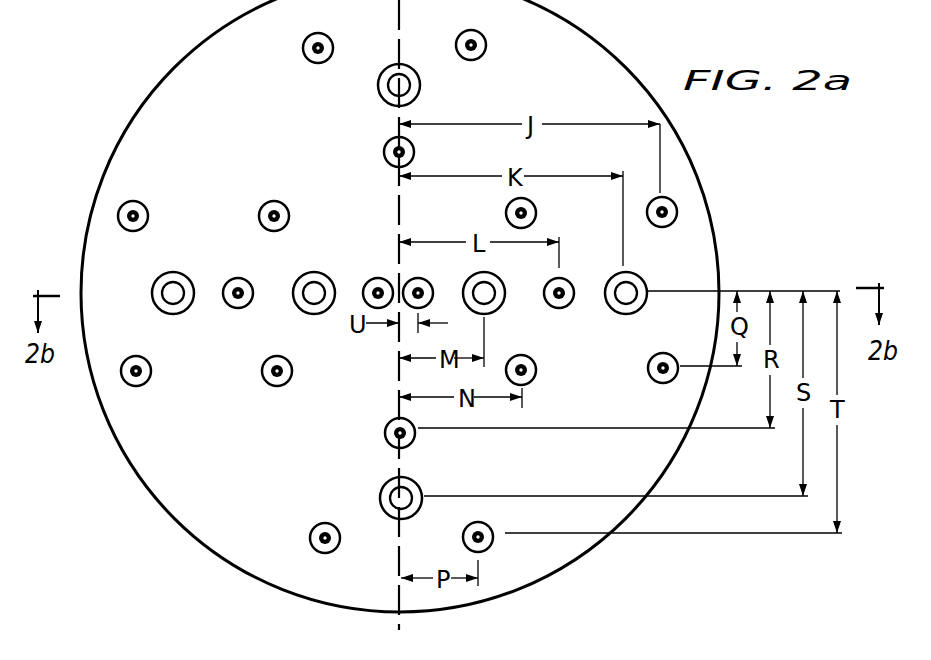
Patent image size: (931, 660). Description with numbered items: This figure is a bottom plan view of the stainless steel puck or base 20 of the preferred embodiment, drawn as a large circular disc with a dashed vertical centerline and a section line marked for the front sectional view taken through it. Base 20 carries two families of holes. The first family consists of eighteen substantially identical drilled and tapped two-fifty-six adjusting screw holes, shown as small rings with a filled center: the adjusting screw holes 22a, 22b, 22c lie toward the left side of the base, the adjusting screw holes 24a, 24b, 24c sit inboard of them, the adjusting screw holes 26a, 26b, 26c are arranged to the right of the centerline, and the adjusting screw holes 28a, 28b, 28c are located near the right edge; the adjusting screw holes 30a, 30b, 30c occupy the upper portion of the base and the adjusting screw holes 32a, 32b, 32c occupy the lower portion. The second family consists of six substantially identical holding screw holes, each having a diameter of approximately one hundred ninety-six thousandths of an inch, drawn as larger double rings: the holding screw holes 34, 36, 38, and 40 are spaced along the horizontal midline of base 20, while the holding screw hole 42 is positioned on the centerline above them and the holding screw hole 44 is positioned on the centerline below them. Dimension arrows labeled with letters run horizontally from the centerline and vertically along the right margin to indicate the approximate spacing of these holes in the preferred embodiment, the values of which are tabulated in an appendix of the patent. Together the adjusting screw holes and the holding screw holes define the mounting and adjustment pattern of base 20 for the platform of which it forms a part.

The base 20 is at (244, 139).
The adjusting screw hole 22a is at (138, 212).
The adjusting screw hole 22b is at (243, 299).
The adjusting screw hole 22c is at (141, 377).
The adjusting screw hole 24a is at (279, 212).
The adjusting screw hole 24b is at (373, 285).
The adjusting screw hole 24c is at (282, 377).
The adjusting screw hole 26a is at (527, 210).
The adjusting screw hole 26b is at (423, 289).
The adjusting screw hole 26c is at (528, 368).
The adjusting screw hole 28a is at (664, 218).
The adjusting screw hole 28b is at (564, 299).
The adjusting screw hole 28c is at (657, 377).
The adjusting screw hole 30a is at (477, 49).
The adjusting screw hole 30b is at (405, 155).
The adjusting screw hole 30c is at (323, 43).
The adjusting screw hole 32a is at (330, 544).
The adjusting screw hole 32b is at (405, 438).
The adjusting screw hole 32c is at (485, 533).
The holding screw hole 34 is at (177, 298).
The holding screw hole 36 is at (317, 298).
The holding screw hole 38 is at (488, 297).
The holding screw hole 40 is at (630, 298).
The holding screw hole 42 is at (403, 88).
The holding screw hole 44 is at (392, 497).